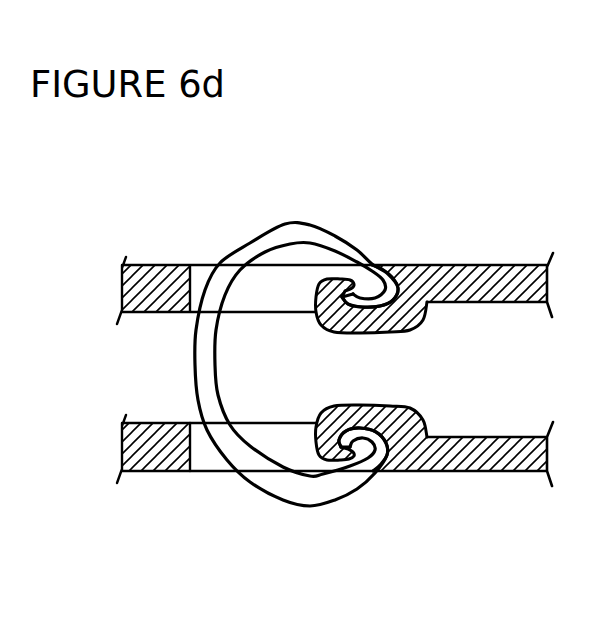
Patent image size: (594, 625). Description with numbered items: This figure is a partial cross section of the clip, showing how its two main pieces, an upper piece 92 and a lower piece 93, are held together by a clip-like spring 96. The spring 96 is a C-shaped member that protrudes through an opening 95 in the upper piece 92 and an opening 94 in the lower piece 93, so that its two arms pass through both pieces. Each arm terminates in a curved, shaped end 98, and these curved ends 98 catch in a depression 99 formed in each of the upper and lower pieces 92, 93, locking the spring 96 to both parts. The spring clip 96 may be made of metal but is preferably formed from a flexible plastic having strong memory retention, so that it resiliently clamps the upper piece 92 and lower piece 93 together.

The upper piece 92 is at (488, 267).
The lower piece 93 is at (147, 458).
The opening 94 is at (212, 452).
The opening 95 is at (188, 265).
The clip-like spring 96 is at (265, 239).
The shaped end 98 is at (343, 288).
The depression 99 is at (381, 292).